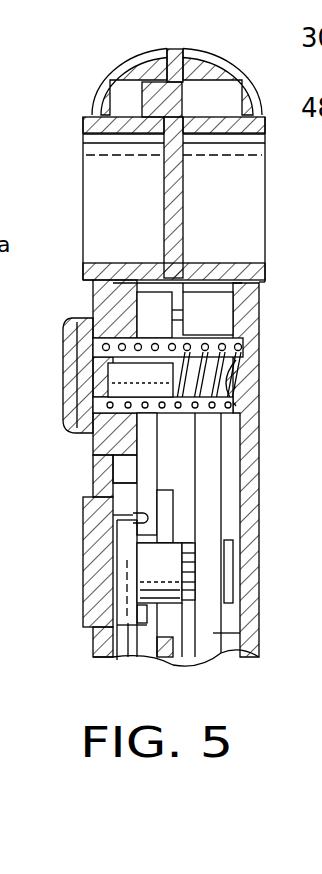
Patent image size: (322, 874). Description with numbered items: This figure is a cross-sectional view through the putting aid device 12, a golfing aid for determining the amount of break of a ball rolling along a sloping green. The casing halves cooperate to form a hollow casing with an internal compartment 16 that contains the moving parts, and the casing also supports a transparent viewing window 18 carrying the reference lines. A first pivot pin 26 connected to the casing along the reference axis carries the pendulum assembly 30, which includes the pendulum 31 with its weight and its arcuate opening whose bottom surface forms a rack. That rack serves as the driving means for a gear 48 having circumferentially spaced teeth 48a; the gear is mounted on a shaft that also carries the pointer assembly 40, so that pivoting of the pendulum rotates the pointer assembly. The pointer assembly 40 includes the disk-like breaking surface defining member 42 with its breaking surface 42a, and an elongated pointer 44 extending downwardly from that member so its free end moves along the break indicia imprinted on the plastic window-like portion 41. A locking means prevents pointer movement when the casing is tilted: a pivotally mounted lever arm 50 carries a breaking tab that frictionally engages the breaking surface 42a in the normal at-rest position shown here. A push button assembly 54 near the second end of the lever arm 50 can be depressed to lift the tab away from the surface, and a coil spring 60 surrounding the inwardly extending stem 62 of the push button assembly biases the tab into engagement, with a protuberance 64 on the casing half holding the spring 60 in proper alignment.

The putting aid device 12 is at (122, 54).
The internal compartment 16 is at (177, 455).
The viewing window 18 is at (178, 201).
The first pivot pin 26 is at (174, 314).
The pendulum assembly 30 is at (240, 633).
The pendulum 31 is at (214, 498).
The pointer assembly 40 is at (116, 586).
The window-like portion 41 is at (93, 643).
The breaking surface defining member 42 is at (130, 543).
The breaking surface 42a is at (97, 508).
The pointer 44 is at (132, 648).
The gear 48 is at (193, 567).
The teeth 48a is at (188, 579).
The lever arm 50 is at (150, 452).
The push button assembly 54 is at (58, 324).
The coil spring 60 is at (243, 346).
The stem 62 is at (128, 374).
The protuberance 64 is at (230, 380).